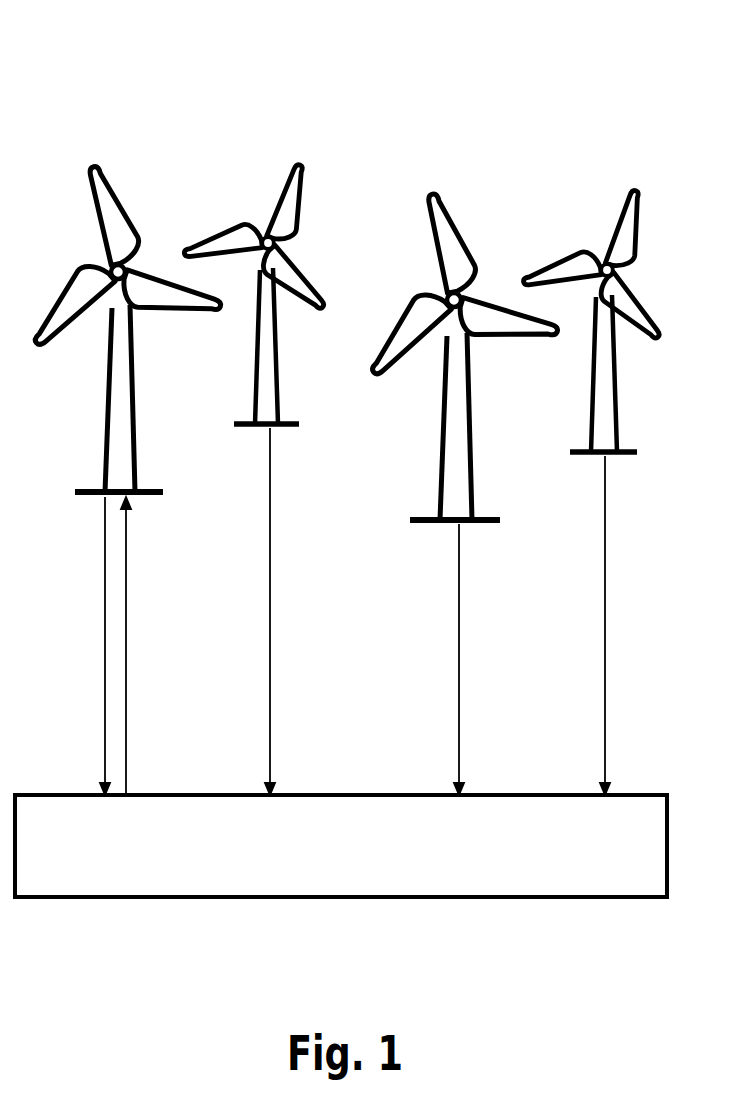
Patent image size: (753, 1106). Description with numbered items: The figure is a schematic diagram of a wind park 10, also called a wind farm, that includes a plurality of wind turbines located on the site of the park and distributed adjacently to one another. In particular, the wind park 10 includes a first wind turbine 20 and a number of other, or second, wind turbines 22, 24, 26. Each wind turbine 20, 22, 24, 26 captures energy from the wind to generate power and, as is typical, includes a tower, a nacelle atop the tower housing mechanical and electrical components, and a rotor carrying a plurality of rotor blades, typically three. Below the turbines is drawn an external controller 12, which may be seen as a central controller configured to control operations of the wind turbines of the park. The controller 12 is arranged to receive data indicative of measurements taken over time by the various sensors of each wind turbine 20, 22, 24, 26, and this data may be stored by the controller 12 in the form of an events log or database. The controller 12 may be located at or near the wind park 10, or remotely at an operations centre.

The wind park 10 is at (597, 101).
The controller 12 is at (210, 897).
The wind turbine 20 is at (113, 182).
The wind turbine 22 is at (297, 163).
The wind turbine 24 is at (440, 193).
The wind turbine 26 is at (652, 308).